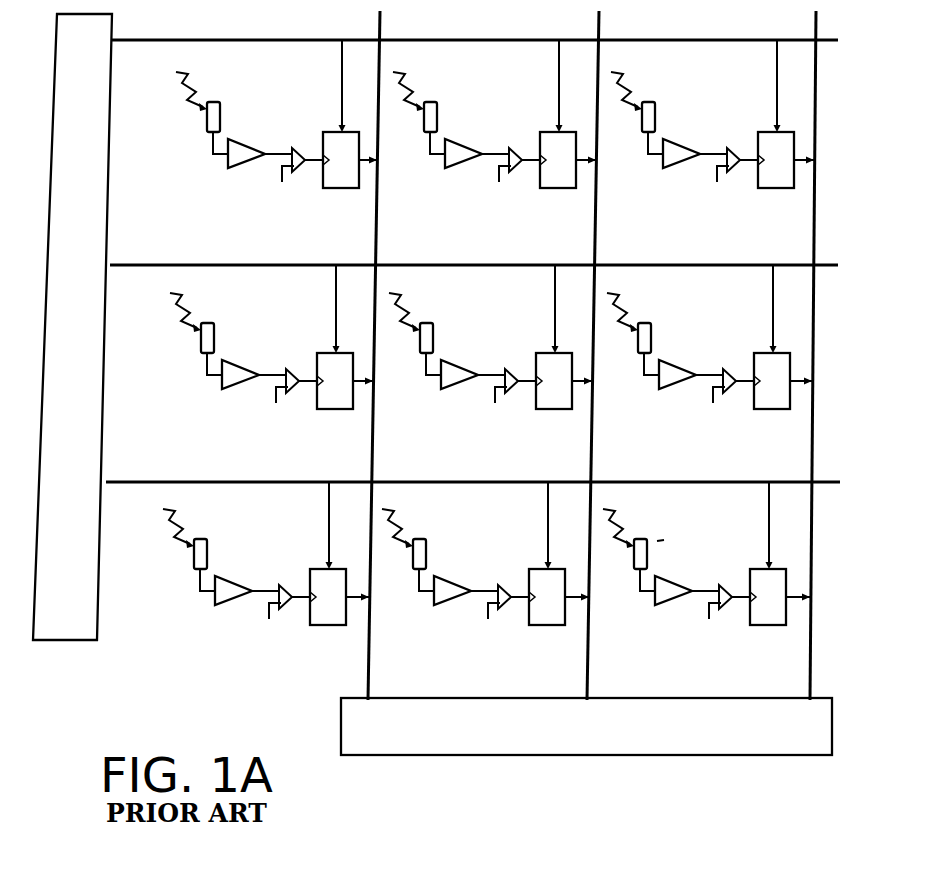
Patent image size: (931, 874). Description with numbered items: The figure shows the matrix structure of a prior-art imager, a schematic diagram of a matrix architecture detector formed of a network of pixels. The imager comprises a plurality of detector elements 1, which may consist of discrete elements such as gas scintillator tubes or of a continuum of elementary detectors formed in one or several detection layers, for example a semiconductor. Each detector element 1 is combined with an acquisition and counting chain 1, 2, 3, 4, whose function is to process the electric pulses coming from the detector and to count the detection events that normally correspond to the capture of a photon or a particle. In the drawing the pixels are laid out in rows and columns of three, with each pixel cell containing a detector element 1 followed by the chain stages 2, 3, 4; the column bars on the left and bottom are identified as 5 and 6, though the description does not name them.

The detector element 1 is at (204, 134).
The acquisition and counting chain element 2 is at (243, 167).
The acquisition and counting chain element 3 is at (302, 147).
The acquisition and counting chain element 4 is at (345, 175).
The row select driver 5 is at (67, 593).
The column readout circuit 6 is at (768, 740).